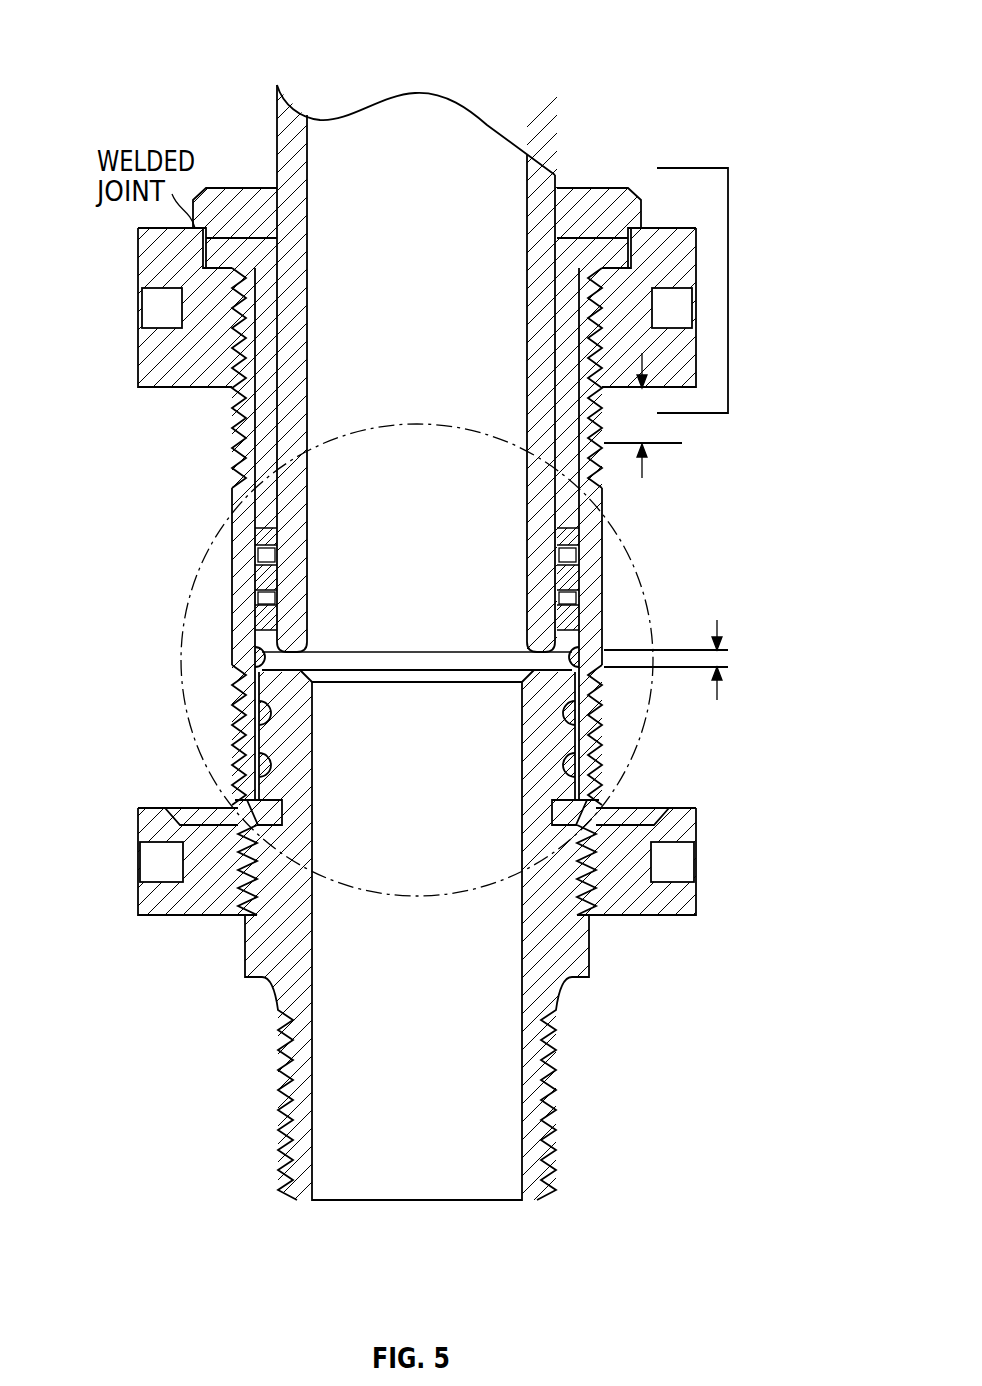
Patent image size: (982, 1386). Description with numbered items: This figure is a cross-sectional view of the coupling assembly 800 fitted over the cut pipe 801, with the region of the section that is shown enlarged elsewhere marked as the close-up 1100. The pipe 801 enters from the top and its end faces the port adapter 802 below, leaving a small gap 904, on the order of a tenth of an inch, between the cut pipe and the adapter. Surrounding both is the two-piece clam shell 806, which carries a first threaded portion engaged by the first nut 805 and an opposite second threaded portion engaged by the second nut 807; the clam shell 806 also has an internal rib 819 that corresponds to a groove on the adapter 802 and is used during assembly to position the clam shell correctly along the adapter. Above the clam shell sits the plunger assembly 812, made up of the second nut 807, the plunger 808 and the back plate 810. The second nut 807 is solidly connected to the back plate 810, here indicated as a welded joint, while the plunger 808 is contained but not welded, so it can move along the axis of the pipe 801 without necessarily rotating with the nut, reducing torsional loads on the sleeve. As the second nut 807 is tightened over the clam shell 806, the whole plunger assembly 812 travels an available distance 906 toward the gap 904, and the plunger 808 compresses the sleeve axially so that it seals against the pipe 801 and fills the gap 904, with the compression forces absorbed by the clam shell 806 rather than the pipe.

The coupling assembly 800 is at (152, 30).
The cut pipe 801 is at (489, 127).
The port adapter 802 is at (590, 985).
The first nut 805 is at (160, 915).
The two-piece clam shell 806 is at (232, 567).
The second nut 807 is at (213, 368).
The plunger 808 is at (238, 420).
The back plate 810 is at (223, 188).
The plunger assembly 812 is at (728, 280).
The internal rib 819 is at (578, 822).
The gap 904 is at (717, 700).
The available distance 906 is at (642, 478).
The close-up 1100 is at (644, 580).